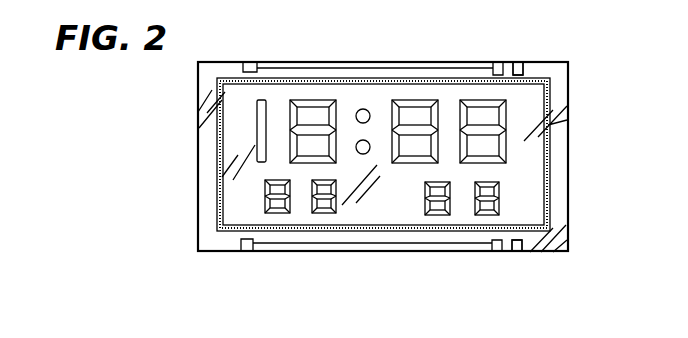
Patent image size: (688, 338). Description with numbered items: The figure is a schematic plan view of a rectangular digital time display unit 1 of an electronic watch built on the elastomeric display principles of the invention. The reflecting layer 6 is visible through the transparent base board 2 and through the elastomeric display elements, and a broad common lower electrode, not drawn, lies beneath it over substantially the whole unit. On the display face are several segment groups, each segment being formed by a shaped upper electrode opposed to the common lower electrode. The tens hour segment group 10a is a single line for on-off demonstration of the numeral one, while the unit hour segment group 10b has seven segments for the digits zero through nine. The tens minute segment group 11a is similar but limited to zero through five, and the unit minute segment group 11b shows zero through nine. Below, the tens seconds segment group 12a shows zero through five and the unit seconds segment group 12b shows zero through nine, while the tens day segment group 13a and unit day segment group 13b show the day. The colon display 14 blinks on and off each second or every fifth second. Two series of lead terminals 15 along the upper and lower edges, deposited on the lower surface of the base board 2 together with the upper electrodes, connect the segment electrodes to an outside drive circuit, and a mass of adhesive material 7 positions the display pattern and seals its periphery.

The digital display device 1 is at (198, 88).
The transparent base board 2 is at (553, 77).
The reflecting layer 6 is at (528, 147).
The adhesive material 7 is at (550, 200).
The tens hour segment group 10a is at (262, 100).
The unit hour segment group 10b is at (318, 100).
The tens minute segment group 11a is at (410, 100).
The unit minute segment group 11b is at (476, 100).
The tens seconds segment group 12a is at (438, 216).
The unit seconds segment group 12b is at (486, 216).
The tens day segment group 13a is at (277, 214).
The unit day segment group 13b is at (323, 214).
The colon display 14 is at (363, 108).
The lead terminals 15 is at (518, 63).